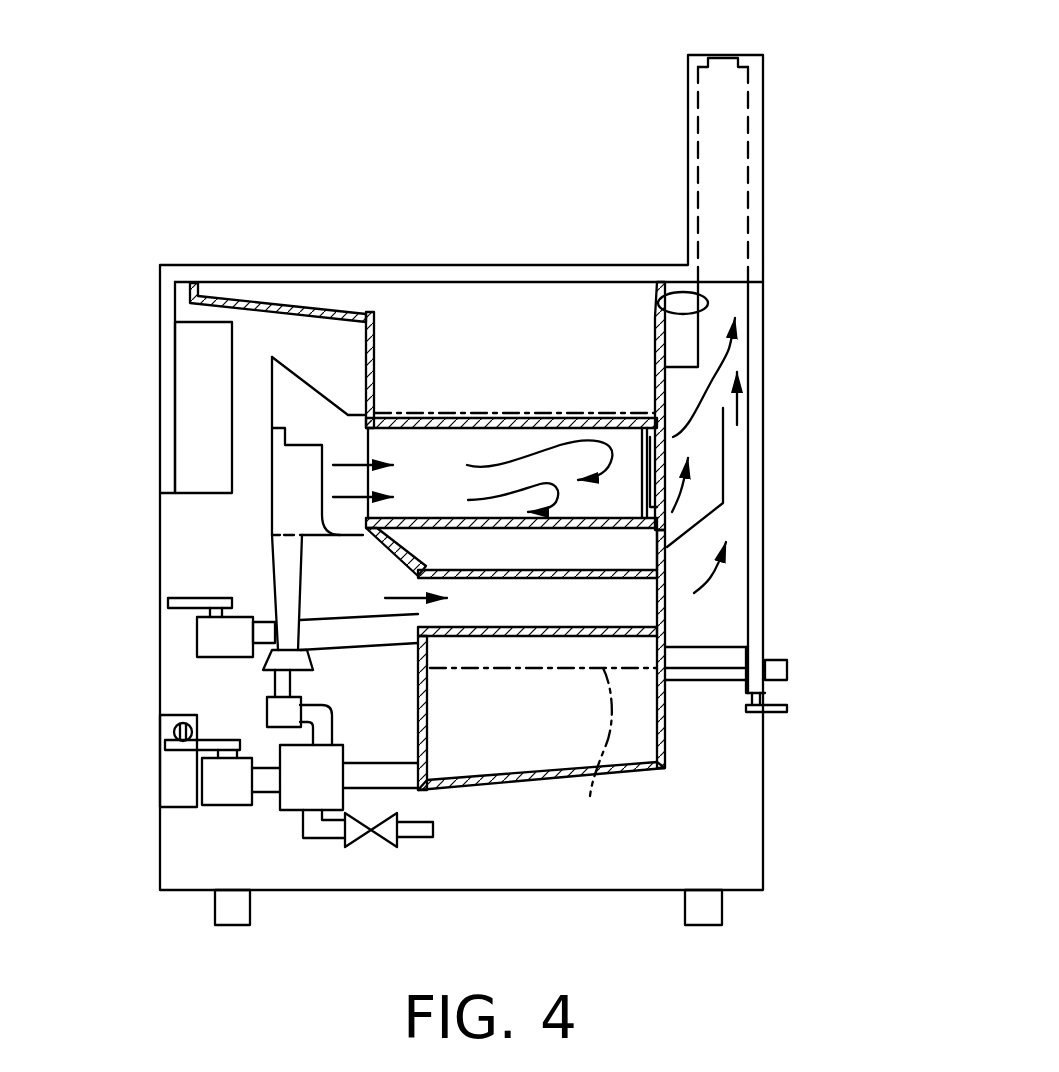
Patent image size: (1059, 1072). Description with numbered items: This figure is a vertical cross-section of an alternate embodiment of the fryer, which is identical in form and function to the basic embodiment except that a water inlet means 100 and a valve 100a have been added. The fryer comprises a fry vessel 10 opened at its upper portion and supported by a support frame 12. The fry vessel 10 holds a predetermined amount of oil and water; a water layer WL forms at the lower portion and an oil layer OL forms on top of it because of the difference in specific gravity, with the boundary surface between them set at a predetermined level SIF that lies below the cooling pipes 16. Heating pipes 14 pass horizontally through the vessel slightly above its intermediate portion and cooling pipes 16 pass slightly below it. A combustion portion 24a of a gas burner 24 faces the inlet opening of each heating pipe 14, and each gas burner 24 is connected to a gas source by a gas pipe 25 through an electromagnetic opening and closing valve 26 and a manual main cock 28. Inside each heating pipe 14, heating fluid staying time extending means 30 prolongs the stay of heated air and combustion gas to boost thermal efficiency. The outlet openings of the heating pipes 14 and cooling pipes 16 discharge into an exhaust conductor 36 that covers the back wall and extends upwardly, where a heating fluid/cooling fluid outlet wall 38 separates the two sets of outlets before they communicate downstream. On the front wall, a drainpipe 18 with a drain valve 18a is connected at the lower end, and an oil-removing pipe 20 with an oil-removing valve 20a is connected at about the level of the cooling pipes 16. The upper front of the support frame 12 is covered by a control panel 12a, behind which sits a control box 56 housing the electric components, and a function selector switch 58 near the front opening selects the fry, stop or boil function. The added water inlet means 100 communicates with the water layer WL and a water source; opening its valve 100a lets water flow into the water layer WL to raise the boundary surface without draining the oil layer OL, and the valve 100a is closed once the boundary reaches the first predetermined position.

The fry vessel 10 is at (680, 741).
The support frame 12 is at (150, 855).
The control panel 12a is at (168, 398).
The heating pipes 14 is at (428, 413).
The cooling pipes 16 is at (467, 638).
The drainpipe 18 is at (363, 770).
The drain valve 18a is at (237, 797).
The oil-removing pipe 20 is at (337, 632).
The oil-removing valve 20a is at (222, 636).
The gas burner 24 is at (278, 577).
The combustion portion 24a is at (307, 455).
The gas pipe 25 is at (275, 712).
The electromagnetic opening and closing valve 26 is at (290, 803).
The manual main cock 28 is at (367, 837).
The heating fluid staying time extending means 30 is at (626, 445).
The exhaust conductor 36 is at (660, 305).
The heating fluid/cooling fluid outlet wall 38 is at (710, 515).
The control box 56 is at (197, 473).
The function selector switch 58 is at (173, 733).
The water inlet means 100 is at (733, 660).
The valve 100a is at (757, 655).
The oil layer OL is at (515, 379).
The water layer WL is at (543, 706).
The predetermined level SIF is at (605, 812).